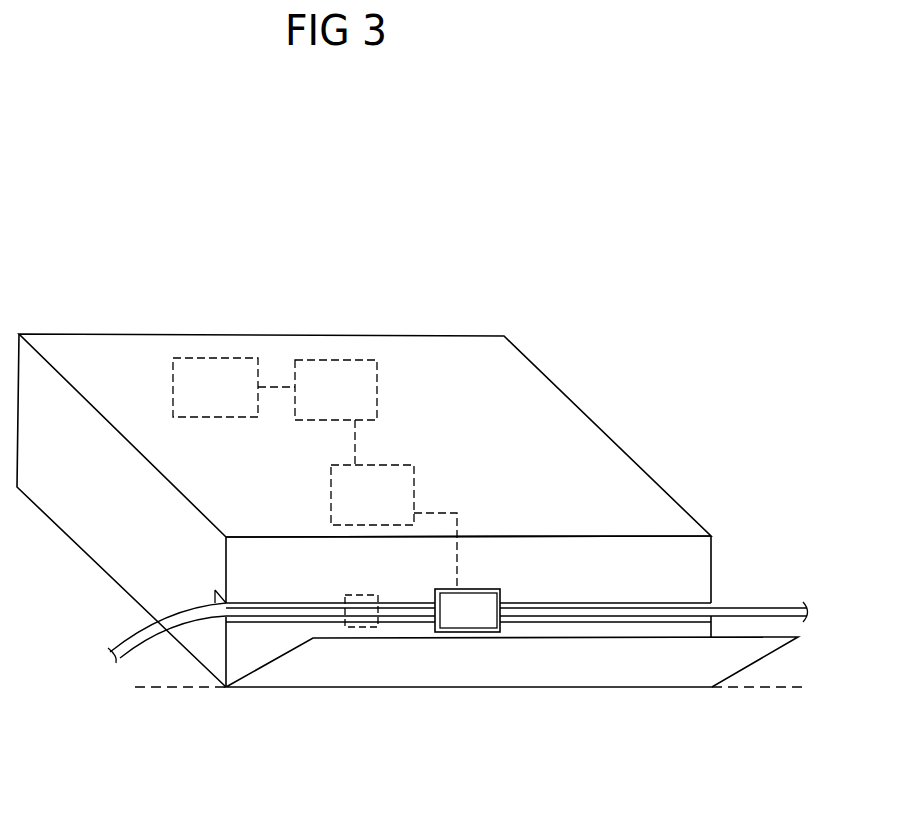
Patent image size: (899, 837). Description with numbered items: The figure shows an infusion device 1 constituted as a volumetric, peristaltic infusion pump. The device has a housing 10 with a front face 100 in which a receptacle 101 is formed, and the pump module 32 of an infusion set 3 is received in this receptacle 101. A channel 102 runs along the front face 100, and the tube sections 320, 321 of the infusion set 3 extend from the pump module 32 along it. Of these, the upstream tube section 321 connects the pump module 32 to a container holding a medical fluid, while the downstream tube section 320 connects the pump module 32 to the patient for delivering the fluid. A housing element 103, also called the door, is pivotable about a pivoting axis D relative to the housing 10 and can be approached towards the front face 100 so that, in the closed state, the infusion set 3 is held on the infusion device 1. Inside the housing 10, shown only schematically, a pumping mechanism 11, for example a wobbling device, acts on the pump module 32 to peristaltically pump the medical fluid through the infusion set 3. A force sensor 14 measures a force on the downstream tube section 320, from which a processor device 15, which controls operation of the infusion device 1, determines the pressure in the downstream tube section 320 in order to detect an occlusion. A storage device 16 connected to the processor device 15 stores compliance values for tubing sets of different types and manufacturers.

The infusion device 1 is at (520, 288).
The housing 10 is at (618, 446).
The front face 100 is at (648, 557).
The receptacle 101 is at (470, 590).
The channel 102 is at (295, 608).
The housing element (door) 103 is at (673, 670).
The pumping mechanism 11 is at (397, 475).
The force sensor 14 is at (367, 627).
The processor device 15 is at (345, 365).
The storage device 16 is at (223, 363).
The infusion set (tubing set) 3 is at (467, 622).
The pump module 32 is at (481, 617).
The downstream tube section 320 is at (140, 637).
The upstream tube section 321 is at (775, 610).
The pivoting axis D is at (183, 687).